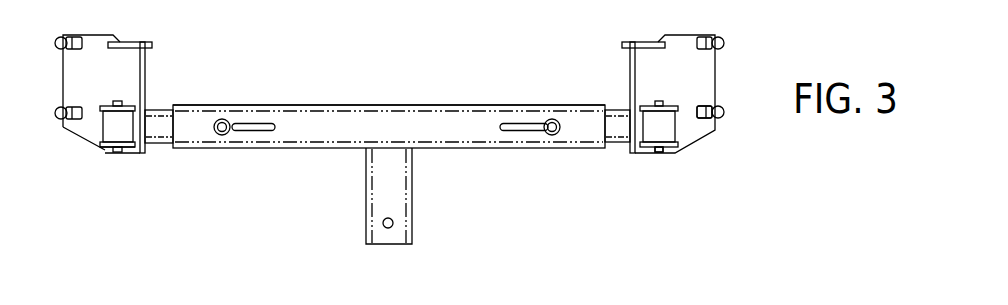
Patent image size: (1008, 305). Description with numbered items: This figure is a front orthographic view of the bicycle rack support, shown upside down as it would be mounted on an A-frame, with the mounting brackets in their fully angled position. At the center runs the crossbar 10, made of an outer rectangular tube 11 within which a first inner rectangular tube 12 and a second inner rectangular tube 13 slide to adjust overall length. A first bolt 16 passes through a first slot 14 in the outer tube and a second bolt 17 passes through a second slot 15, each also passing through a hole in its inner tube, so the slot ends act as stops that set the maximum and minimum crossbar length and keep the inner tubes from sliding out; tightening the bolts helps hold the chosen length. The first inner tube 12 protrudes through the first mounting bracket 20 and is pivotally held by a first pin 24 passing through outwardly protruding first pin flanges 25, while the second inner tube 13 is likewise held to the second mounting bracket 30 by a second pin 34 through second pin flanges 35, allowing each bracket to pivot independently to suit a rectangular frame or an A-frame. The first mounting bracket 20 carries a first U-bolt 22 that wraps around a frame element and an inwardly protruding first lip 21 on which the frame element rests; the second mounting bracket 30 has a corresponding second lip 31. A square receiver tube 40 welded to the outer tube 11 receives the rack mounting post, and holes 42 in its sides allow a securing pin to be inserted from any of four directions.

The crossbar 10 is at (372, 103).
The outer rectangular tube 11 is at (438, 122).
The first inner rectangular tube 12 is at (617, 112).
The second inner rectangular tube 13 is at (160, 122).
The first slot 14 is at (505, 130).
The second slot 15 is at (263, 130).
The first bolt 16 is at (552, 132).
The second bolt 17 is at (223, 131).
The first mounting bracket 20 is at (687, 132).
The first lip 21 is at (627, 42).
The first U-bolt 22 is at (707, 120).
The first pin 24 is at (657, 152).
The first pin flanges 25 is at (672, 152).
The second mounting bracket 30 is at (73, 81).
The second lip 31 is at (152, 41).
The second pin 34 is at (117, 152).
The second pin flanges 35 is at (102, 145).
The square receiver tube 40 is at (390, 197).
The holes 42 is at (393, 225).